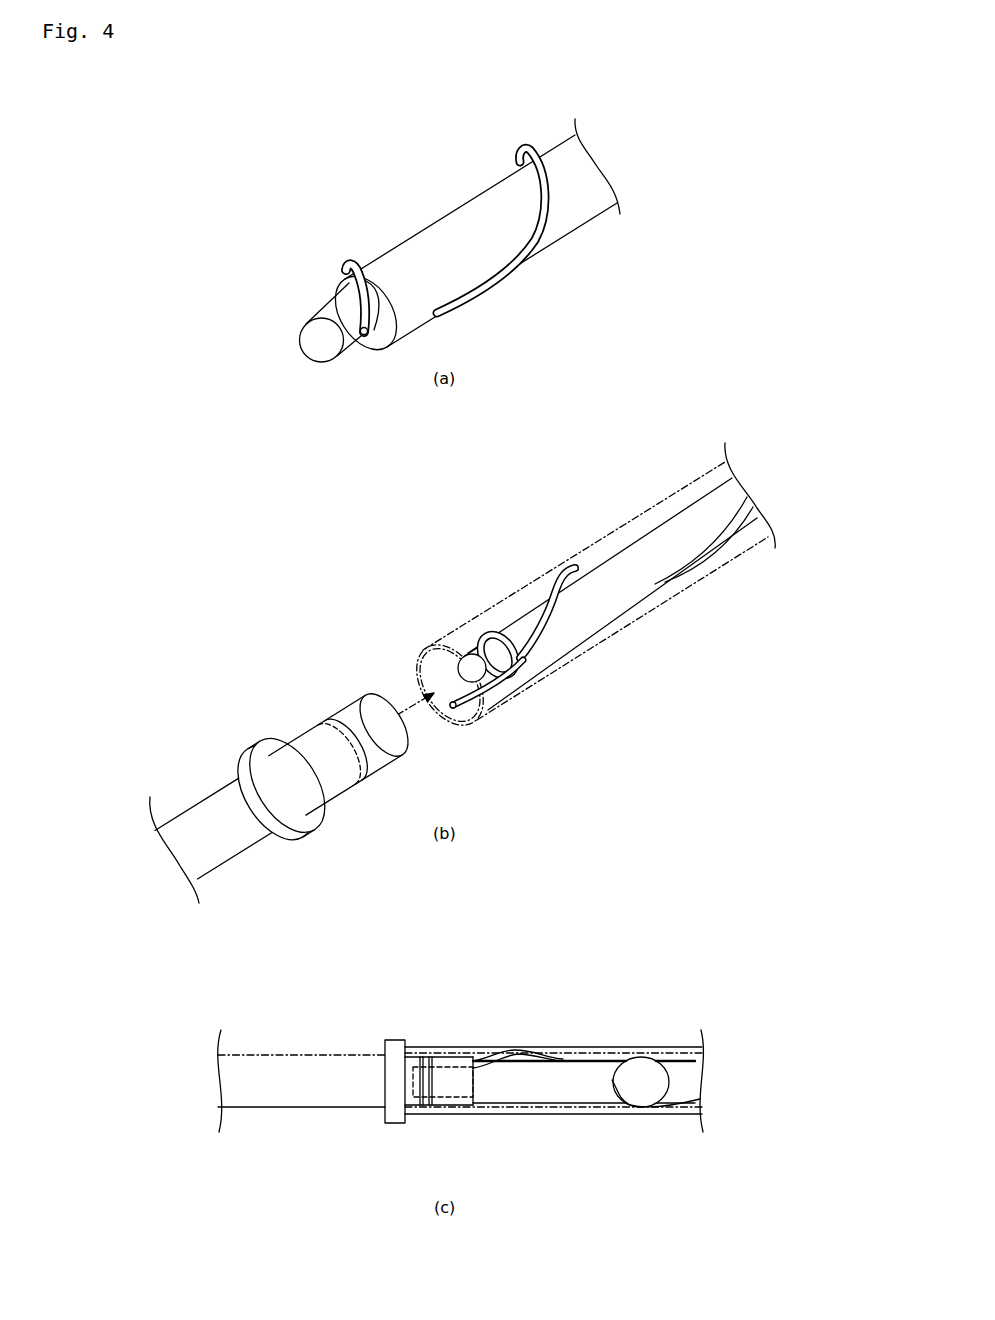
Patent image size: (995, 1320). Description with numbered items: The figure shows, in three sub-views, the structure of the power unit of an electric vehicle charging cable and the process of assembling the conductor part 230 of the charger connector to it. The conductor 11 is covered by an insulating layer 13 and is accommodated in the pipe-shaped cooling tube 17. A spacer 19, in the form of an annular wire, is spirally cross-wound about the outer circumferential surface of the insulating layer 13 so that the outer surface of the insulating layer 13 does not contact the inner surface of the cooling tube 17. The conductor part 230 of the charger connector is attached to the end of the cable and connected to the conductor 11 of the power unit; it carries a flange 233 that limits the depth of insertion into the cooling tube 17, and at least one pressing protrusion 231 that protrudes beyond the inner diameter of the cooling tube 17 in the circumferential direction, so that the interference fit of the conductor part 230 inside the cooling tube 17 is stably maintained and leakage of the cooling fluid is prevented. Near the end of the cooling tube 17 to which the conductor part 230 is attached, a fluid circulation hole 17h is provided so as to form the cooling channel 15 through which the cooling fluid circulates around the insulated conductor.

The conductor 11 is at (320, 318).
The insulating layer 13 is at (452, 227).
The cooling channel 15 is at (428, 678).
The cooling tube 17 is at (470, 722).
The fluid circulation hole 17h is at (623, 1106).
The spacer 19 is at (355, 262).
The conductor part 230 is at (212, 800).
The pressing protrusion 231 is at (315, 723).
The flange 233 is at (265, 743).